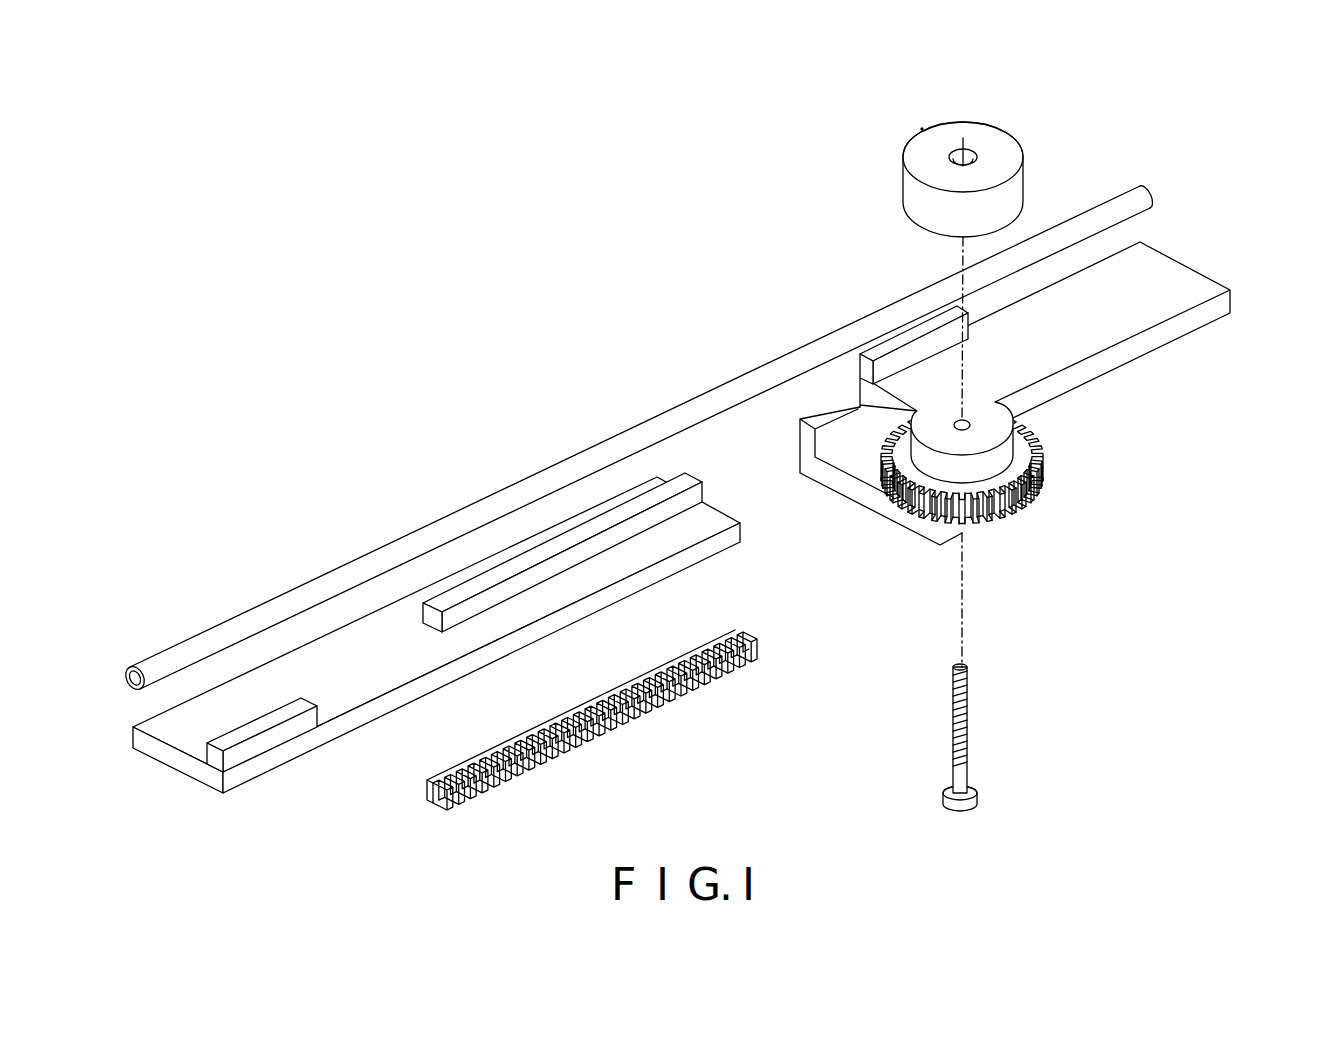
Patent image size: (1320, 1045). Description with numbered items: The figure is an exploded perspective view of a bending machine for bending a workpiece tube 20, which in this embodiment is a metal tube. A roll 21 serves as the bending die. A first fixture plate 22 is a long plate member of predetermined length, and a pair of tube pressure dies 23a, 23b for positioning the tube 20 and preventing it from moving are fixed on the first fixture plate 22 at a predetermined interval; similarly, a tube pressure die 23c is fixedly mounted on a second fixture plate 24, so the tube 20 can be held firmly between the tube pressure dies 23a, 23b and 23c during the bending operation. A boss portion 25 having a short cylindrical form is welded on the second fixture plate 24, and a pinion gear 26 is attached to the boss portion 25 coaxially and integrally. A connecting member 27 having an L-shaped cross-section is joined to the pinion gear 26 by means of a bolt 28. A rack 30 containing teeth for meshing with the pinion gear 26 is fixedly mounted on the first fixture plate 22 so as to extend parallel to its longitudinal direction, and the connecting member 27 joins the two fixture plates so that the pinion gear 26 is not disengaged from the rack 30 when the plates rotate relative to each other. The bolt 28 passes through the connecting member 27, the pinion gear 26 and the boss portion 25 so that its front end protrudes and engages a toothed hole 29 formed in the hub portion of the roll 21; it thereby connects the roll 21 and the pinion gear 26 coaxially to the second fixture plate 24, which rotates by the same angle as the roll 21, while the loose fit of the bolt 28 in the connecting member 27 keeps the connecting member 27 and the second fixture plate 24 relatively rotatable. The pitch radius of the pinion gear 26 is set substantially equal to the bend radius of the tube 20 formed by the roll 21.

The tube 20 is at (695, 410).
The roll 21 is at (910, 194).
The first fixture plate 22 is at (372, 640).
The tube pressure die 23a is at (260, 743).
The tube pressure die 23b is at (640, 505).
The tube pressure die 23c is at (918, 333).
The second fixture plate 24 is at (1148, 275).
The boss portion 25 is at (1013, 420).
The pinion gear 26 is at (1040, 462).
The connecting member 27 is at (858, 465).
The bolt 28 is at (968, 758).
The toothed hole 29 is at (965, 150).
The rack 30 is at (612, 690).